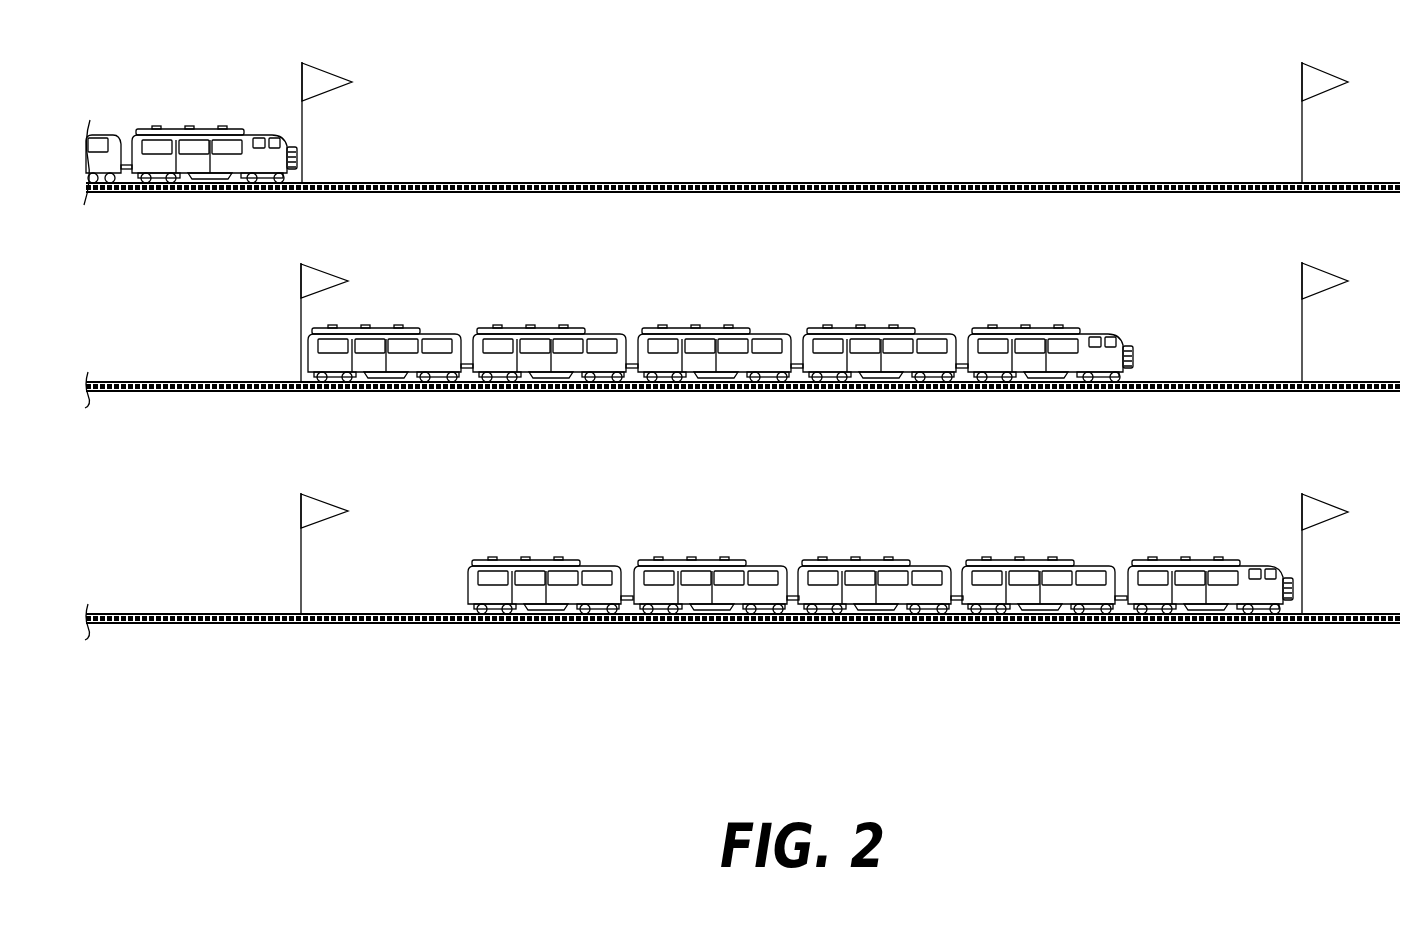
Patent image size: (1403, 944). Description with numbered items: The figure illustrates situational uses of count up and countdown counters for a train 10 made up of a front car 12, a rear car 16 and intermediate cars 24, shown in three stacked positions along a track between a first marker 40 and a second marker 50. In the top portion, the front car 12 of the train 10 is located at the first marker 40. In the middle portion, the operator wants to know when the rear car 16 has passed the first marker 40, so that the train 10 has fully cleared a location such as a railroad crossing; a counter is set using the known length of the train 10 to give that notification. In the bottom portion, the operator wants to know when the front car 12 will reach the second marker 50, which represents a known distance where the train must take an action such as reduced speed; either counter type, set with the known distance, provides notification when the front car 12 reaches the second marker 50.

The train 10 is at (689, 319).
The front car 12 is at (245, 137).
The rear car 16 is at (433, 333).
The intermediate cars 24 is at (96, 128).
The first marker 40 is at (303, 122).
The second marker 50 is at (1303, 122).